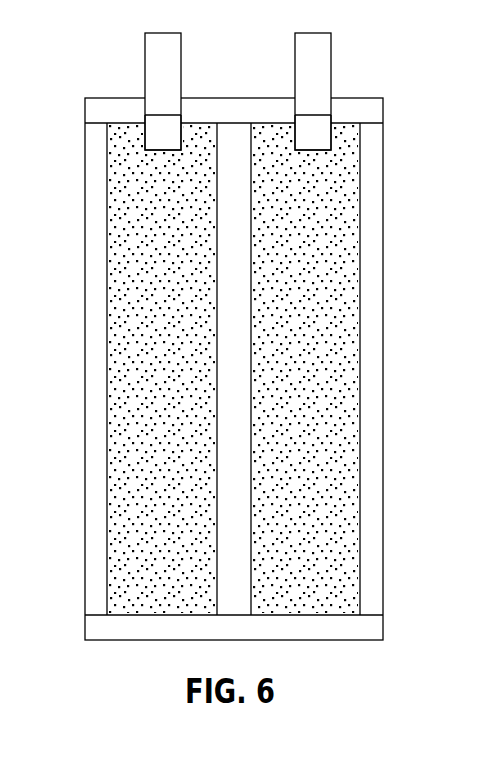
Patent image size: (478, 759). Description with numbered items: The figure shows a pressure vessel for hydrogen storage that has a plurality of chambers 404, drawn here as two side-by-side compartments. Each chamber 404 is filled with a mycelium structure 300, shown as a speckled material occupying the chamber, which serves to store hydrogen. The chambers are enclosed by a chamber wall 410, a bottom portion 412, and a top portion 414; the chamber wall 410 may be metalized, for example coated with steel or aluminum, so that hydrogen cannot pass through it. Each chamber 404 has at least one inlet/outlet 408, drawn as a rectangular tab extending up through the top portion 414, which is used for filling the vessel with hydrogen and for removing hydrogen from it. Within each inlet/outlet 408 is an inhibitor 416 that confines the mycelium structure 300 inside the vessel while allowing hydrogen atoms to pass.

The mycelium structure 300 is at (137, 408).
The chamber 404 is at (108, 215).
The inlet/outlet 408 is at (181, 55).
The chamber wall 410 is at (370, 307).
The bottom portion 412 is at (371, 628).
The top portion 414 is at (358, 98).
The inhibitor 416 is at (162, 131).